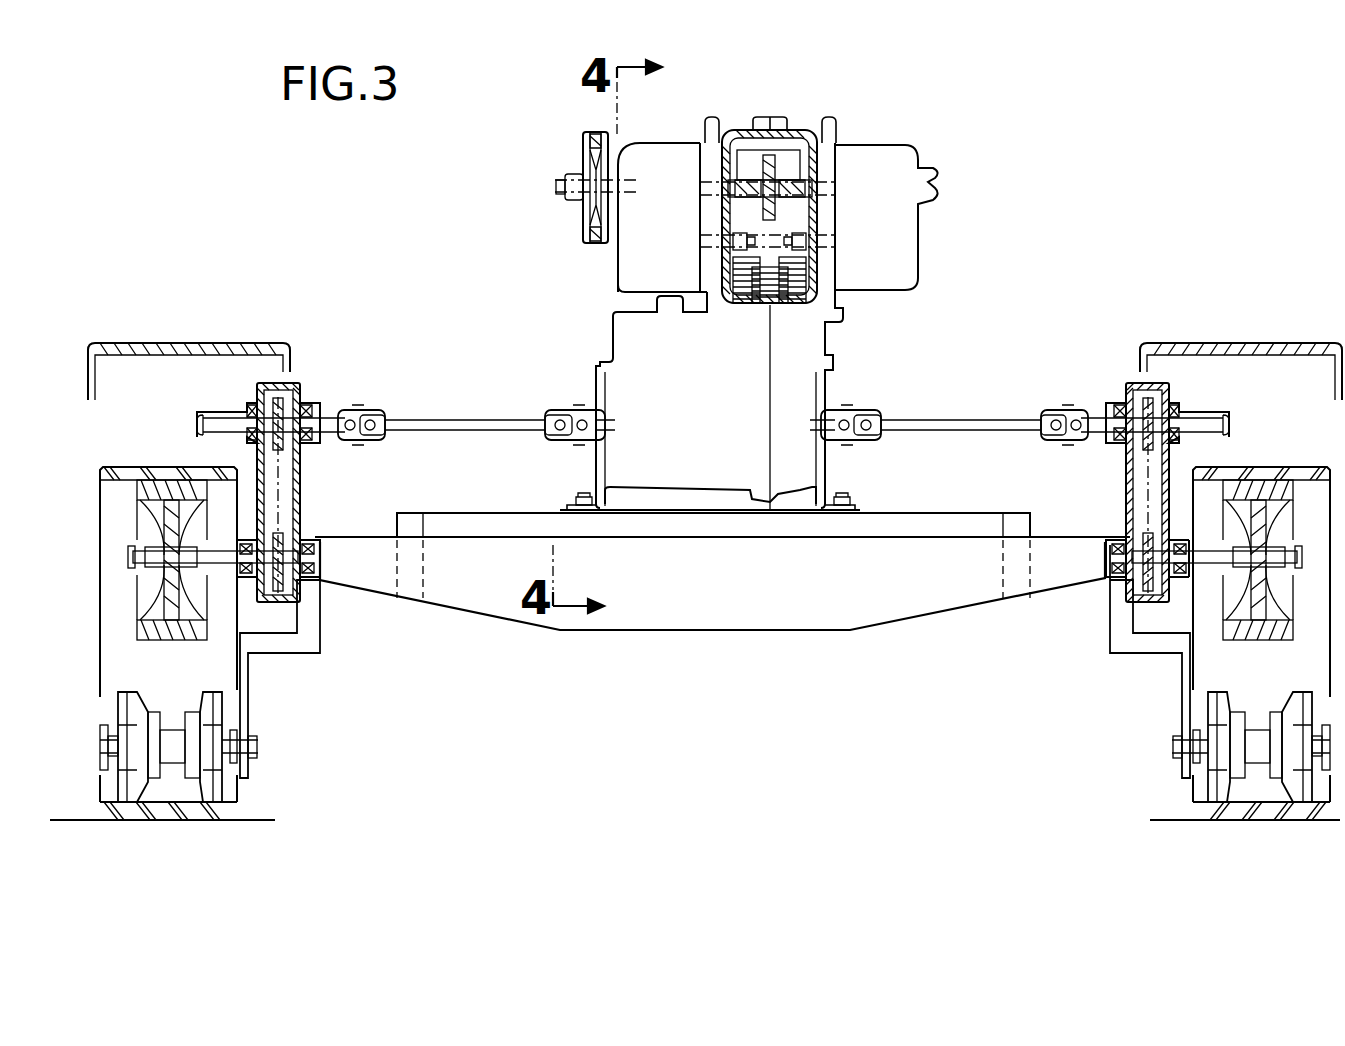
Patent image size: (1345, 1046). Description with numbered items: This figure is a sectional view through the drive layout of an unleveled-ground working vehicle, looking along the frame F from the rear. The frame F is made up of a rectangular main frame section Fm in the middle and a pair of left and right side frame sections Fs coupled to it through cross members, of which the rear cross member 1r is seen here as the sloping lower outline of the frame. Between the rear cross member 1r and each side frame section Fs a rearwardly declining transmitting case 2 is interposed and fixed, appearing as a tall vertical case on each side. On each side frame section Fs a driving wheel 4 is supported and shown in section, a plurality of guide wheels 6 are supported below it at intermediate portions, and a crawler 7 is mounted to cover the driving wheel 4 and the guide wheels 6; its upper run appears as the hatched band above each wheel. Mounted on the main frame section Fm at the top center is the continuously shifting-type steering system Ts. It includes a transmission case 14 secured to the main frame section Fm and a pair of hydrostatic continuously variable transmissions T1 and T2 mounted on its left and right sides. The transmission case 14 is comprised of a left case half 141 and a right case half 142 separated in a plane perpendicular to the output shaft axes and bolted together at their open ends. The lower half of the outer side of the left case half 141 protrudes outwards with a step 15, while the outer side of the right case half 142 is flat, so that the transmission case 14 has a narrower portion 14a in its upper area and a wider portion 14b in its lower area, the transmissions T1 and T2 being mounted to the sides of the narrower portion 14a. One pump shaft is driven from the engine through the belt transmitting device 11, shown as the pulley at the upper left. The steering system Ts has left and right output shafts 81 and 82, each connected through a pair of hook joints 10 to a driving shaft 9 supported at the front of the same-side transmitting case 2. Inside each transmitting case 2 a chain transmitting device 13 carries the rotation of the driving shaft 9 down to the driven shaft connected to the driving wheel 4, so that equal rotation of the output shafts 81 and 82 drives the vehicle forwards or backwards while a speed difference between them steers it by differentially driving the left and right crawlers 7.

The transmitting case 2 is at (257, 396).
The driving wheel 4 is at (172, 517).
The guide wheels 6 is at (125, 700).
The crawler 7 is at (150, 468).
The driving shaft 9 is at (328, 418).
The hook joints 10 is at (368, 424).
The belt transmitting device 11 is at (596, 126).
The chain transmitting device 13 is at (303, 503).
The transmission case 14 is at (860, 75).
The left case half 141 is at (712, 140).
The right case half 142 is at (830, 140).
The narrower portion 14a is at (710, 208).
The wider portion 14b is at (630, 340).
The step 15 is at (680, 303).
The left output shaft 81 is at (606, 426).
The right output shaft 82 is at (828, 425).
The continuously shifting-type steering system Ts is at (975, 160).
The hydrostatic continuously variable transmission T1 is at (632, 262).
The hydrostatic continuously variable transmission T2 is at (905, 243).
The frame F is at (700, 640).
The main frame section Fm is at (497, 518).
The side frame sections Fs is at (318, 638).
The rear cross member 1r is at (937, 606).